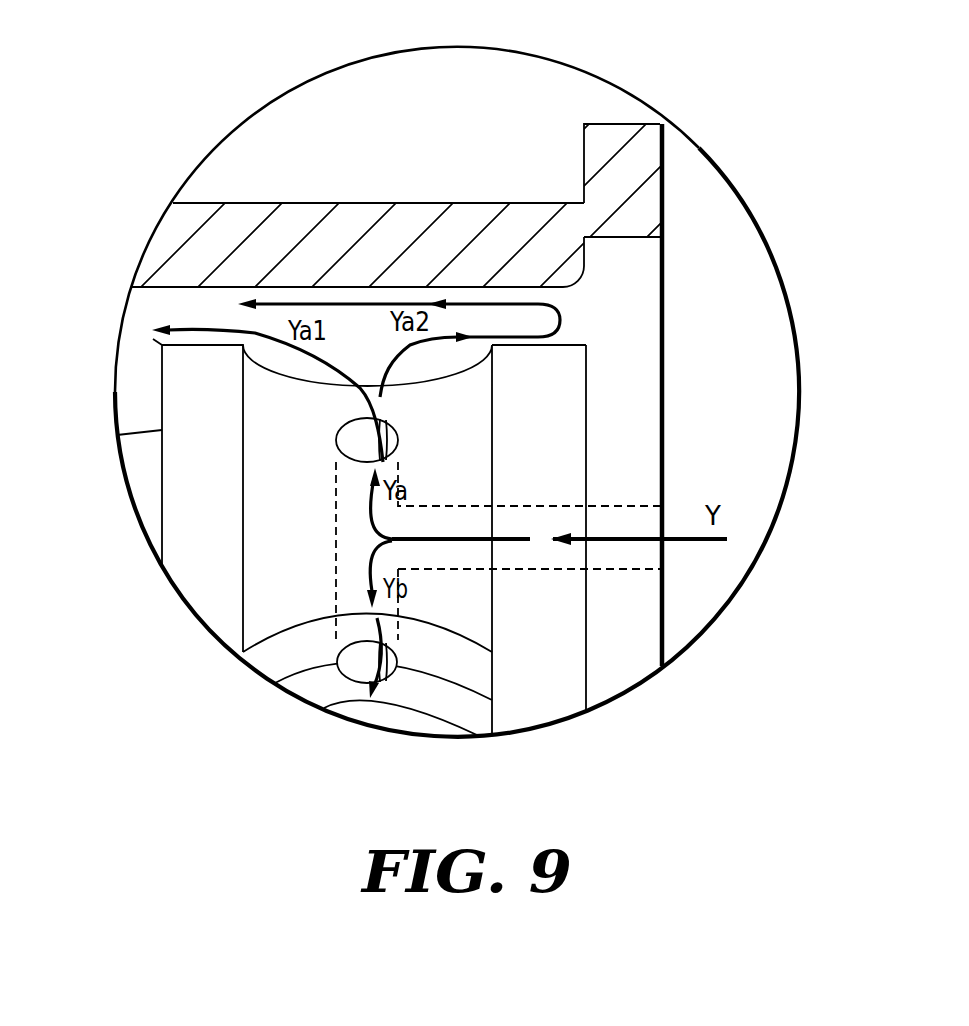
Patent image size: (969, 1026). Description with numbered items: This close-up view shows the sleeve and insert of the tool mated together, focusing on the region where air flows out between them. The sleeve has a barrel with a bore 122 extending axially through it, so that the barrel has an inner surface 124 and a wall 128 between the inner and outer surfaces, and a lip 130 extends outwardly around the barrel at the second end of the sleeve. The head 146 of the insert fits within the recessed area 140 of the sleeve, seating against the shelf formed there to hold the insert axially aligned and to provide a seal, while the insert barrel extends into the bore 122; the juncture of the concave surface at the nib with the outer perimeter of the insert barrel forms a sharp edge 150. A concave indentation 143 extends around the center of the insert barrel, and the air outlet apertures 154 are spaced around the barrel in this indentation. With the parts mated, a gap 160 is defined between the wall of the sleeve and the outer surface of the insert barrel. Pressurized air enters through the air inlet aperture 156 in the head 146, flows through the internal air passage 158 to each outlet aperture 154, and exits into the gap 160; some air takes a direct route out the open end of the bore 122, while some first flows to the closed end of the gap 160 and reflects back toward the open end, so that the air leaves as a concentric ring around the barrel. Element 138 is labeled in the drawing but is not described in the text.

The bore 122 is at (140, 395).
The inner surface 124 is at (190, 288).
The wall 128 is at (390, 240).
The lip 130 is at (625, 158).
The gap 138 is at (273, 283).
The recessed area 140 is at (663, 203).
The concave indentation 143 is at (448, 373).
The head 146 is at (632, 325).
The sharp edge 150 is at (155, 342).
The air outlet apertures 154 is at (353, 437).
The air inlet aperture 156 is at (632, 515).
The internal air passage 158 is at (544, 548).
The gap 160 is at (148, 302).